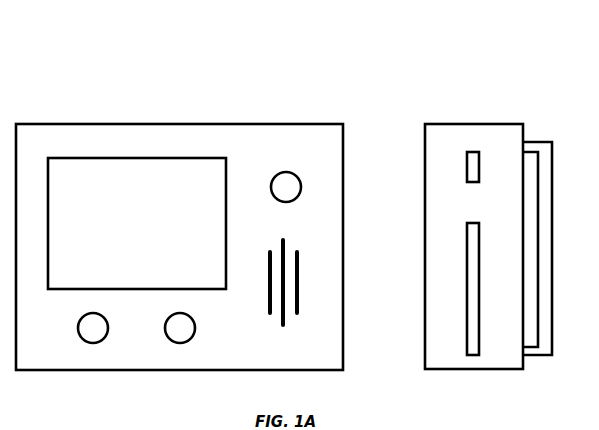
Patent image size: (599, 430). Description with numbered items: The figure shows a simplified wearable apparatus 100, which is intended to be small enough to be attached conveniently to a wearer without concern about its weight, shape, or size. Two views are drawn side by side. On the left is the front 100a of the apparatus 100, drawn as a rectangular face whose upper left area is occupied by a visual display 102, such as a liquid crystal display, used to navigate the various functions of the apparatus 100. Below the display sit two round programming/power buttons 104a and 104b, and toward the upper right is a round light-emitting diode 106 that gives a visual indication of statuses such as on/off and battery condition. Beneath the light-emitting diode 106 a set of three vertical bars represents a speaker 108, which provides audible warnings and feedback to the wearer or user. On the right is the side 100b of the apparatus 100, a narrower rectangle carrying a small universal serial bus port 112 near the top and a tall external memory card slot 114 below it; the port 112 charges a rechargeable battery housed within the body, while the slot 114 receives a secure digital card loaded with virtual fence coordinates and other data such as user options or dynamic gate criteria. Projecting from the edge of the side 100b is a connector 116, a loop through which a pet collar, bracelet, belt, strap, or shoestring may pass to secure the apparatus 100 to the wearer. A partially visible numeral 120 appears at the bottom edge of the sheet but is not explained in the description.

The apparatus 100 is at (68, 35).
The front 100a is at (233, 123).
The side 100b is at (465, 123).
The visual display 102 is at (133, 157).
The programming/power button 104a is at (105, 318).
The programming/power button 104b is at (192, 318).
The light-emitting diode 106 is at (292, 173).
The speaker 108 is at (290, 239).
The universal serial bus port 112 is at (480, 161).
The external memory card slot 114 is at (480, 249).
The connector 116 is at (552, 199).
The element 120 is at (14, 423).